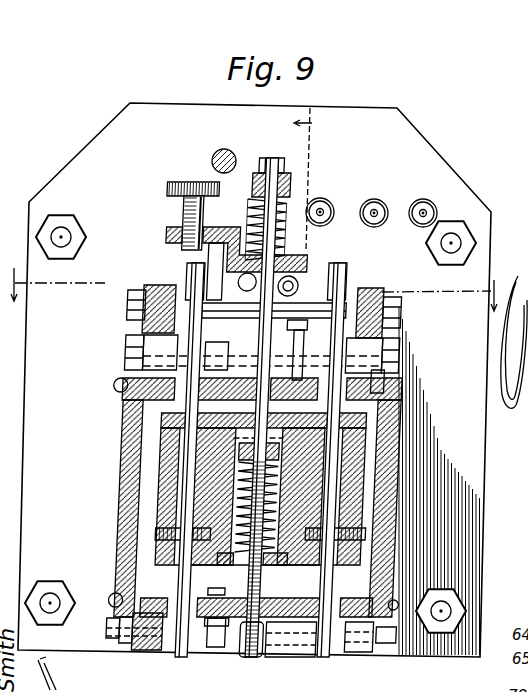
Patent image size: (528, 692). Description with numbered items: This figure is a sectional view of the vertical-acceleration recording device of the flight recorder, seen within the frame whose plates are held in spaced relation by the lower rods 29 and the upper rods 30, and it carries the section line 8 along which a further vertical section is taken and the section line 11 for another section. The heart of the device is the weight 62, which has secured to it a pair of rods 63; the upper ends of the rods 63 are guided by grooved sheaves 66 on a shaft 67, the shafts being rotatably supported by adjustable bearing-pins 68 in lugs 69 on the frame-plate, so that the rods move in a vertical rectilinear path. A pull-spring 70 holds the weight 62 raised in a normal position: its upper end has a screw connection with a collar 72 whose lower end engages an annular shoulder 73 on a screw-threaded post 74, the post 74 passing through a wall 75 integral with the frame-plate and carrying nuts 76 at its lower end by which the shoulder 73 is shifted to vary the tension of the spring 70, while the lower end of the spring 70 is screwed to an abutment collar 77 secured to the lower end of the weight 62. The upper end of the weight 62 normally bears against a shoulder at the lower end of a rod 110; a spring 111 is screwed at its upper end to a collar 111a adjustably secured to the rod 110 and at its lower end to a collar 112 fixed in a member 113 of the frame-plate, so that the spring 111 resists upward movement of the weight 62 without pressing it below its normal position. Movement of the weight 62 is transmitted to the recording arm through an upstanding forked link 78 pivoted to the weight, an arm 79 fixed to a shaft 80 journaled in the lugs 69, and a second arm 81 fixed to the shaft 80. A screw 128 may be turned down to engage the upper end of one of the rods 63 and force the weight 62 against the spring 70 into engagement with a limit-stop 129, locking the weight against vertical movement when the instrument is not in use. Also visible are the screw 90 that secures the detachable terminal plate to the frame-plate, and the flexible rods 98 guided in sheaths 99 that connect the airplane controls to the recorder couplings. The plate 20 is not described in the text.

The section line 8— 8 is at (255, 289).
The section line 11— 11 is at (312, 123).
The base plate 20 is at (487, 270).
The lower rods 29 is at (450, 605).
The upper rods 30 is at (461, 240).
The weight 62 is at (362, 468).
The rods 63 is at (150, 372).
The grooved sheaves 66 is at (179, 268).
The shaft 67 is at (234, 311).
The adjustable bearing-pins 68 is at (123, 310).
The lugs 69 is at (137, 288).
The pull-spring 70 is at (359, 443).
The collar 72 is at (323, 425).
The annular shoulder 73 is at (243, 467).
The screw-threaded post 74 is at (247, 478).
The wall 75 is at (304, 618).
The nuts 76 is at (275, 633).
The abutment collar 77 is at (253, 566).
The upstanding forked link 78 is at (376, 378).
The arm 79 is at (122, 348).
The shaft 80 is at (300, 356).
The arm 81 is at (200, 256).
The screw 90 is at (220, 151).
The flexible rod 98 is at (322, 211).
The sheath 99 is at (375, 212).
The rod 110 is at (258, 362).
The spring 111 is at (237, 208).
The collar 111a is at (241, 174).
The collar 112 is at (278, 250).
The member 113 is at (157, 238).
The screw 128 is at (156, 184).
The limit-stop 129 is at (219, 648).